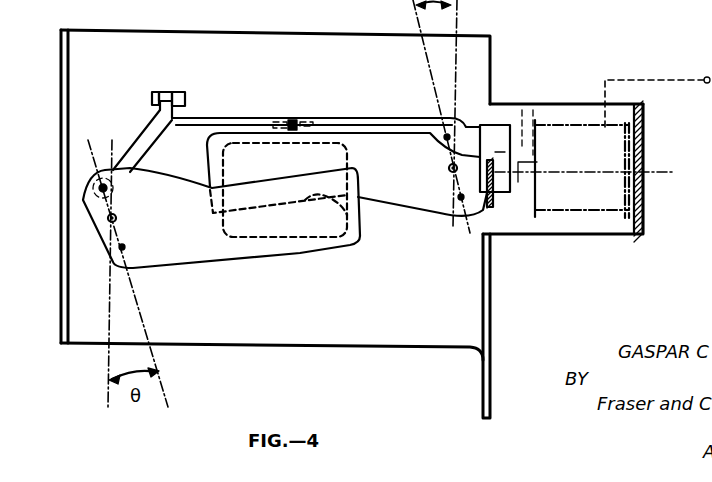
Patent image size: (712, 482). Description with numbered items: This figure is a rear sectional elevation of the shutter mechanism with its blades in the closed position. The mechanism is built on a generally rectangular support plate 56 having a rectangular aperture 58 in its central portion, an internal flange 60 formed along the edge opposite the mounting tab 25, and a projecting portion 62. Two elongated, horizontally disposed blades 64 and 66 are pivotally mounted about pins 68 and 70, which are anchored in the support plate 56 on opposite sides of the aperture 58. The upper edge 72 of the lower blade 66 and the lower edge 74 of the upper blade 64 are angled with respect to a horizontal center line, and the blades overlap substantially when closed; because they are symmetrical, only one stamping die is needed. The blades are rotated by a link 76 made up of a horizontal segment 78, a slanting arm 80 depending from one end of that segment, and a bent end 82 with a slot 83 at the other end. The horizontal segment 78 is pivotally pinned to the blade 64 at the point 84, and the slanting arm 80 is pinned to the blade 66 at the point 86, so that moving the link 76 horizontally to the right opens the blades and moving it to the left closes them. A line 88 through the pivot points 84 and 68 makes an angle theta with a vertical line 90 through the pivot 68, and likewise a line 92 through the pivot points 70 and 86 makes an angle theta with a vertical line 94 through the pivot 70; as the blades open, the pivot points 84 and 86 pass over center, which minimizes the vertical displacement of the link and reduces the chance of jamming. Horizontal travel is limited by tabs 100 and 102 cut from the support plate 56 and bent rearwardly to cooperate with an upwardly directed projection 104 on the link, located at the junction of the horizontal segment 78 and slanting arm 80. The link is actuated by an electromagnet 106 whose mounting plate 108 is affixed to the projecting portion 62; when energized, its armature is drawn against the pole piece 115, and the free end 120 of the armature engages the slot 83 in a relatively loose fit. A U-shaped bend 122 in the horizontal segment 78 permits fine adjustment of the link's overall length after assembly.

The mounting tab 25 is at (490, 372).
The support plate 56 is at (231, 318).
The rectangular aperture 58 is at (310, 240).
The internal flange 60 is at (61, 90).
The projecting portion 62 is at (596, 103).
The upper blade 64 is at (417, 167).
The lower blade 66 is at (191, 248).
The pin 68 is at (451, 169).
The pin 70 is at (108, 220).
The upper edge of lower blade 72 is at (280, 177).
The lower edge of upper blade 74 is at (361, 222).
The link 76 is at (224, 114).
The horizontal segment 78 is at (316, 120).
The slanting arm 80 is at (148, 148).
The bent end 82 is at (485, 124).
The slot 83 is at (493, 158).
The pivot point 84 is at (446, 134).
The pivot point 86 is at (92, 195).
The line 88 is at (418, 15).
The vertical line 90 is at (458, 12).
The line 92 is at (166, 393).
The vertical line 94 is at (108, 393).
The stop tab 100 is at (153, 93).
The stop tab 102 is at (184, 93).
The upwardly directed projection 104 is at (176, 70).
The electromagnet 106 is at (575, 214).
The mounting plate 108 is at (644, 198).
The pole piece 115 is at (523, 150).
The free end of armature 120 is at (496, 205).
The U-shaped bend 122 is at (281, 122).